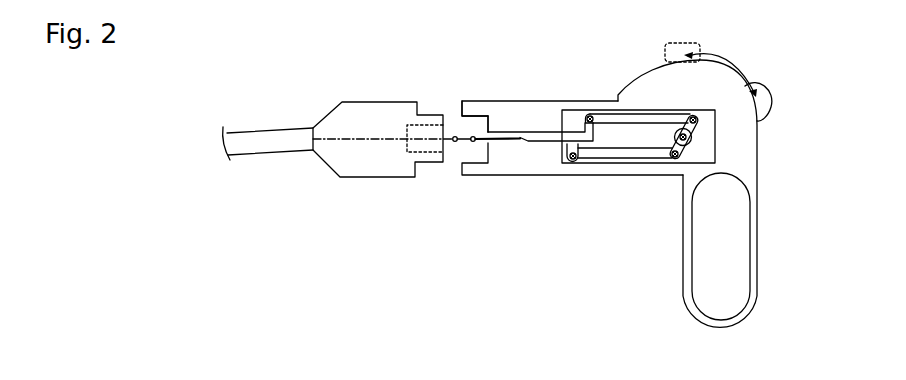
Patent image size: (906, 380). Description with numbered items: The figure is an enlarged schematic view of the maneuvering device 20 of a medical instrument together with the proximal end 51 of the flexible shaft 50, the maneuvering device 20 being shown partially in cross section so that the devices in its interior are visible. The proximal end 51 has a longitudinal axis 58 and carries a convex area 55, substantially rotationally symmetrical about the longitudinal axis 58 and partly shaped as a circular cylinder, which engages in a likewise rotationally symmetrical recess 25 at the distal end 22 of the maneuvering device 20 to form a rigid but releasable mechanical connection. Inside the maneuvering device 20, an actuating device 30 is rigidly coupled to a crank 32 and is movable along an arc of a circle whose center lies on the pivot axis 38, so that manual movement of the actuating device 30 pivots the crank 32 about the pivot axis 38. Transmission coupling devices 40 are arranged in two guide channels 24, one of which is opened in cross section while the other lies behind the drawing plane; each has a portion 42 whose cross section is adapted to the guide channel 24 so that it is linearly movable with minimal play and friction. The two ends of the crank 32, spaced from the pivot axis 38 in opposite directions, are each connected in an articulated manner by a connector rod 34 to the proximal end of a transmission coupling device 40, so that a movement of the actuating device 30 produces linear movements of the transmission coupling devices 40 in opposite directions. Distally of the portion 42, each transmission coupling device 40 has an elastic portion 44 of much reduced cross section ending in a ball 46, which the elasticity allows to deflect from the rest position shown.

The maneuvering device 20 is at (559, 64).
The distal end of the maneuvering device 22 is at (465, 104).
The guide channel 24 is at (512, 145).
The recess 25 is at (477, 118).
The actuating device 30 is at (768, 112).
The crank 32 is at (691, 117).
The connector rod 34 is at (635, 122).
The pivot axis 38 is at (679, 133).
The transmission coupling device 40 is at (608, 187).
The portion guided in the guide channel 42 is at (545, 143).
The elastic portion 44 is at (486, 141).
The ball 46 is at (455, 141).
The shaft 50 is at (246, 63).
The proximal end of the shaft 51 is at (381, 63).
The convex area 55 is at (430, 118).
The longitudinal axis 58 is at (360, 140).